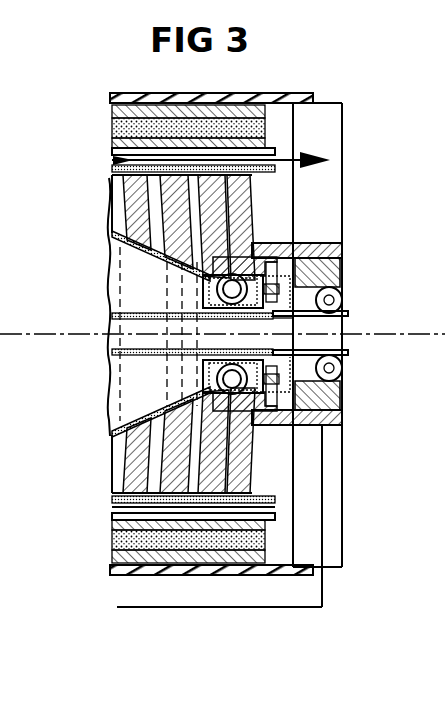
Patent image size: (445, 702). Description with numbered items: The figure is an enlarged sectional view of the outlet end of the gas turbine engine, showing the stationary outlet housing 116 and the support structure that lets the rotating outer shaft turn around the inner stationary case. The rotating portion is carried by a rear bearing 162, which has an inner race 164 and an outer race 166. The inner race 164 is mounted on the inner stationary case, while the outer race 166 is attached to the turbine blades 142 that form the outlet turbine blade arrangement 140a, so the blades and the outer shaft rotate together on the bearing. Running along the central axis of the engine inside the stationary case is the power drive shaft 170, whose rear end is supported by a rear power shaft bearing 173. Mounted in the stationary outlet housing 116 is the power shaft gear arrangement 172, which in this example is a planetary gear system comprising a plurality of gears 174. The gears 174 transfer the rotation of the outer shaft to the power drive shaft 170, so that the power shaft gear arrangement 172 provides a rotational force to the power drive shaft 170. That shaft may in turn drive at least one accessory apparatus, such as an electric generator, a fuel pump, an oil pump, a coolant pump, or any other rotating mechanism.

The stationary outlet housing 116 is at (334, 598).
The outlet turbine blade arrangement 140a is at (235, 452).
The turbine blades 142 is at (178, 496).
The rear bearing 162 is at (190, 288).
The inner race 164 is at (200, 317).
The outer race 166 is at (133, 243).
The power drive shaft 170 is at (132, 315).
The power shaft gear arrangement 172 is at (268, 225).
The rear power shaft bearing 173 is at (341, 299).
The gears 174 is at (287, 356).